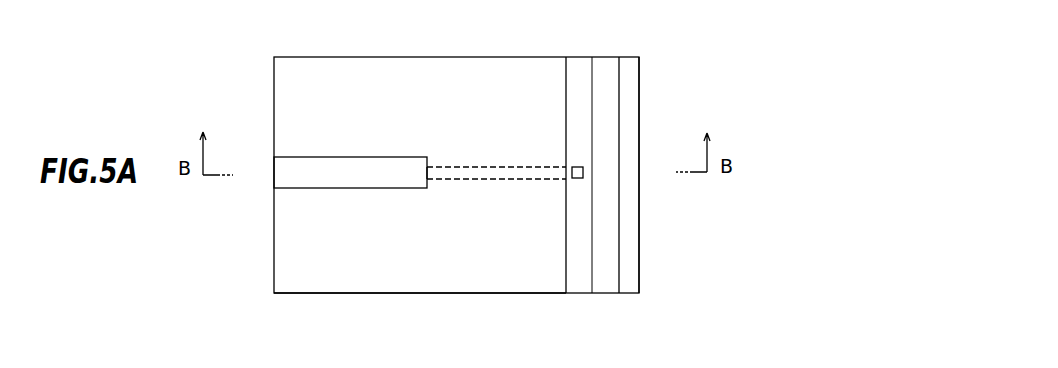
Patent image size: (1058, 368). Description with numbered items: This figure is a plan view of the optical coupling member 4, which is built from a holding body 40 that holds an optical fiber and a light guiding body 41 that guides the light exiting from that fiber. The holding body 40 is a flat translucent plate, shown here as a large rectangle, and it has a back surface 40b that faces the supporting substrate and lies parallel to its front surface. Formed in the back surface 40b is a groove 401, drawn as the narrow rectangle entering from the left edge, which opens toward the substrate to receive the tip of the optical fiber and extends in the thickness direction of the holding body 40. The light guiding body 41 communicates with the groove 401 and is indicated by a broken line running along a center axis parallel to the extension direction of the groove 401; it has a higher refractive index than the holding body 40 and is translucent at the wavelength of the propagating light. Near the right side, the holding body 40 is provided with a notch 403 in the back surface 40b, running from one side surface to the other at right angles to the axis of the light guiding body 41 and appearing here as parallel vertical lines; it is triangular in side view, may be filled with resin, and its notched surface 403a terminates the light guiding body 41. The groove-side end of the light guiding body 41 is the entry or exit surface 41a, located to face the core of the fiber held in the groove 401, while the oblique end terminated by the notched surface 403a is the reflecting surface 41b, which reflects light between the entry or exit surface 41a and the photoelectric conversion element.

The optical coupling member 4 is at (680, 53).
The holding body 40 is at (274, 79).
The back surface 40b is at (488, 281).
The groove 401 is at (297, 157).
The notch 403 is at (579, 306).
The notched surface 403a is at (578, 65).
The light guiding body 41 is at (488, 173).
The entry or exit surface 41a is at (427, 173).
The reflecting surface 41b is at (584, 176).